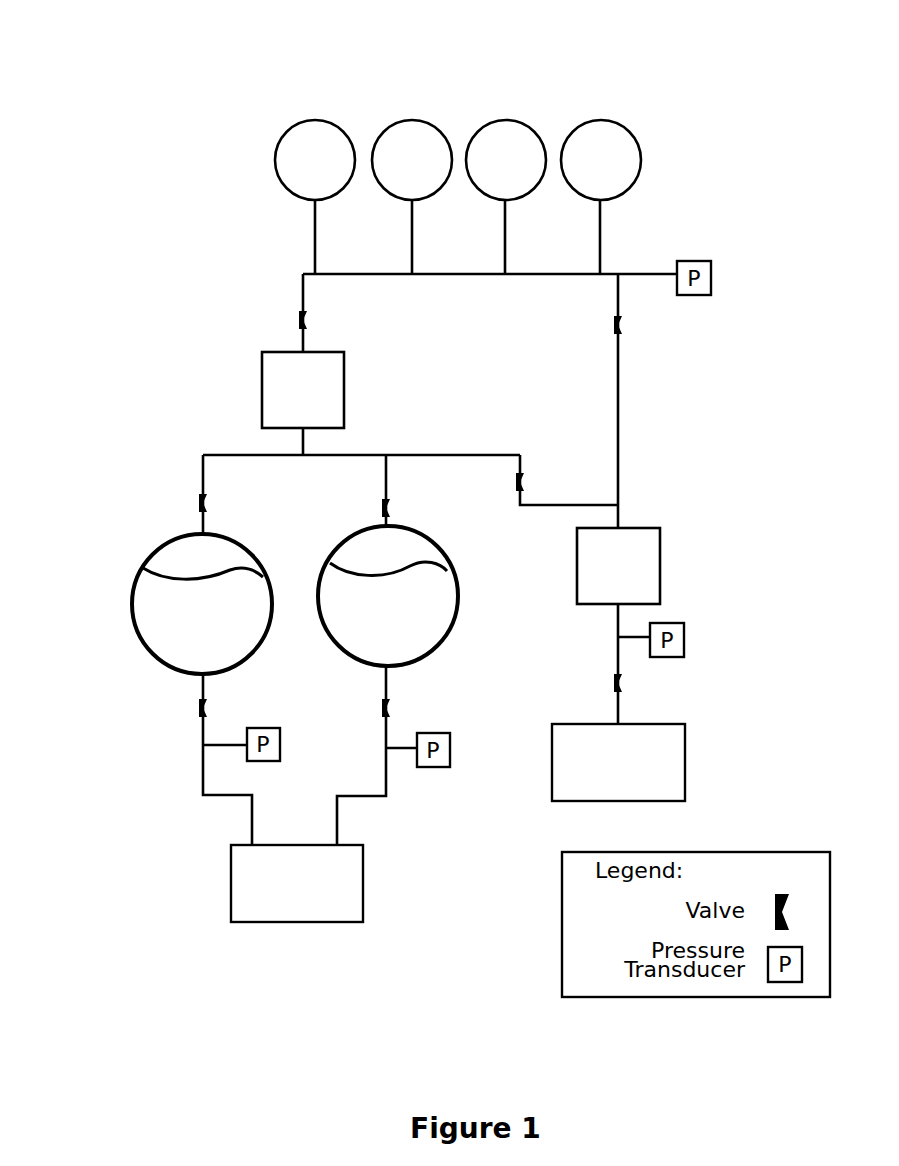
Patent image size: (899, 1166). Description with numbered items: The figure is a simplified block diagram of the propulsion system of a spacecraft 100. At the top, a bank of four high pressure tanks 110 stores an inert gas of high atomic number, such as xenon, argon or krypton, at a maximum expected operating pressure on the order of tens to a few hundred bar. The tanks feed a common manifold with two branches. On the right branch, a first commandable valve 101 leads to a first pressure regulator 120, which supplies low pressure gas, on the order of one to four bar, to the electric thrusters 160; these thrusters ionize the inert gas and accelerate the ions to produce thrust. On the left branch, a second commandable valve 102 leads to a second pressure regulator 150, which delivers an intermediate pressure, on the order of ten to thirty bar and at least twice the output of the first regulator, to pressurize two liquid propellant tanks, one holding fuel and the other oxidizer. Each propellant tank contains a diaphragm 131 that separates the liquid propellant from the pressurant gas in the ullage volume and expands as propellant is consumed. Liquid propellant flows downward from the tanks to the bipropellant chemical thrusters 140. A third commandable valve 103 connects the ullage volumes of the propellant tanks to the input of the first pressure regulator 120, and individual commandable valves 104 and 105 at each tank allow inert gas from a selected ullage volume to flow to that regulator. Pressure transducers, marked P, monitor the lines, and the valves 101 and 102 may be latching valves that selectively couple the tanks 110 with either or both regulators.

The spacecraft 100 is at (148, 48).
The first commandable valve 101 is at (622, 318).
The second commandable valve 102 is at (307, 321).
The third commandable valve 103 is at (524, 477).
The commandable valve 104 is at (199, 503).
The commandable valve 105 is at (390, 500).
The high pressure tanks 110 is at (458, 160).
The first pressure regulator 120 is at (660, 575).
The diaphragm 131 is at (352, 573).
The chemical thrusters 140 is at (363, 880).
The second pressure regulator 150 is at (344, 390).
The electric thrusters 160 is at (685, 770).